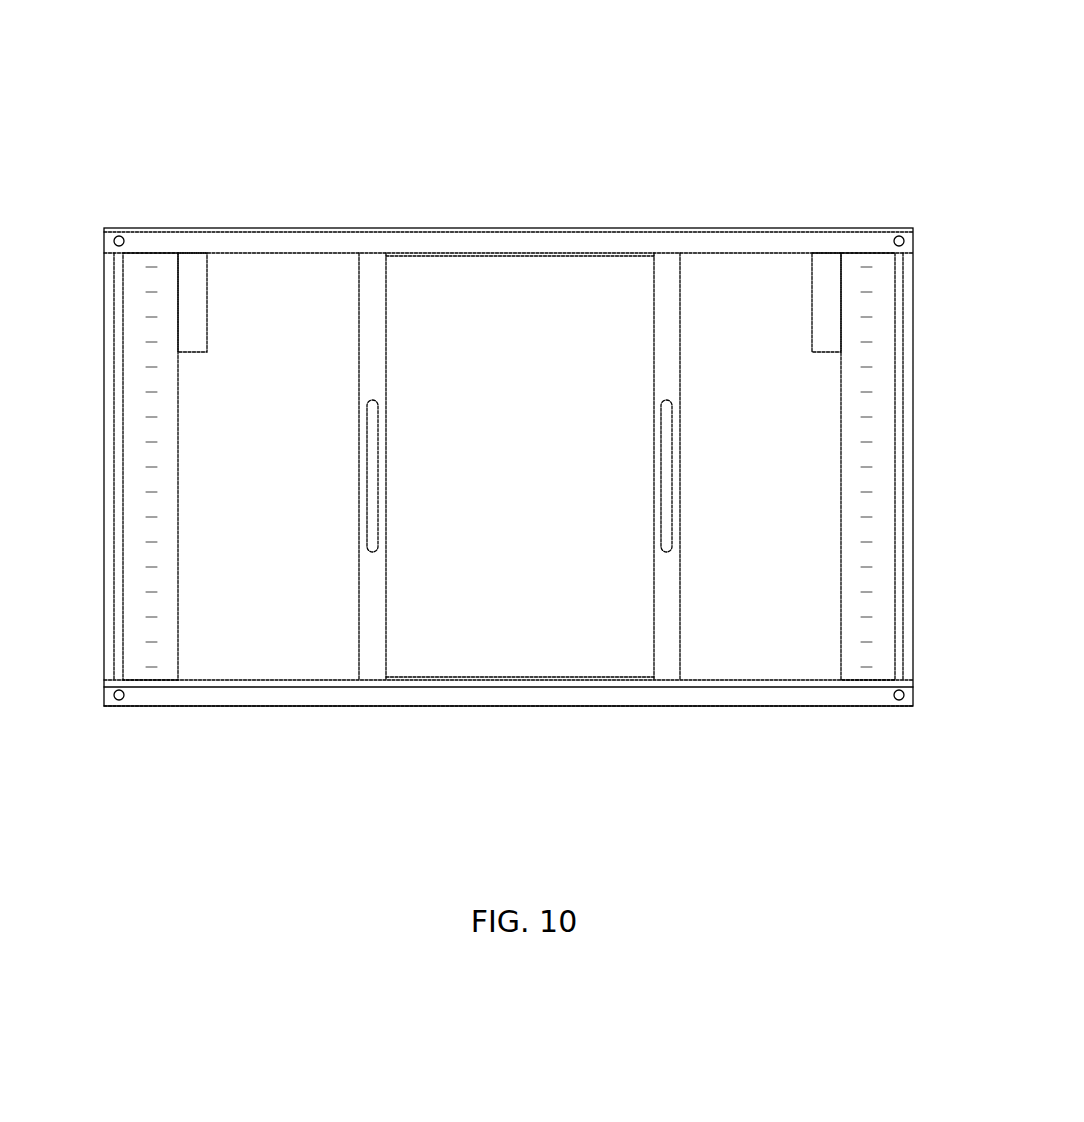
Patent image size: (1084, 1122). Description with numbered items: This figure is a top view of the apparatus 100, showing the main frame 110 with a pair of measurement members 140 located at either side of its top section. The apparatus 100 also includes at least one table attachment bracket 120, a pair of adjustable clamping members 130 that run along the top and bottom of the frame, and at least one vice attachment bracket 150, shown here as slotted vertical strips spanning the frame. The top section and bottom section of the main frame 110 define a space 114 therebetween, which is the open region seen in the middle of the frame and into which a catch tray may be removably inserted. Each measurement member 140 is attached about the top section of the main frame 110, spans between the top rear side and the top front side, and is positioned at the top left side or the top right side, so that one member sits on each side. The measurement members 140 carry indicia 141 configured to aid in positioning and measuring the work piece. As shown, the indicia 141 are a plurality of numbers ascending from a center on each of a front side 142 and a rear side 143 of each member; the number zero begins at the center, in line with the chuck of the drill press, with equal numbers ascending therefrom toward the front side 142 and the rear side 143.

The apparatus 100 is at (684, 79).
The main frame 110 is at (588, 220).
The space 114 is at (462, 510).
The table attachment bracket 120 is at (500, 355).
The adjustable clamping member 130 is at (328, 230).
The measurement member 140 is at (145, 429).
The indicia 141 is at (124, 588).
The front side 142 is at (148, 655).
The rear side 143 is at (152, 270).
The vice attachment bracket 150 is at (371, 622).